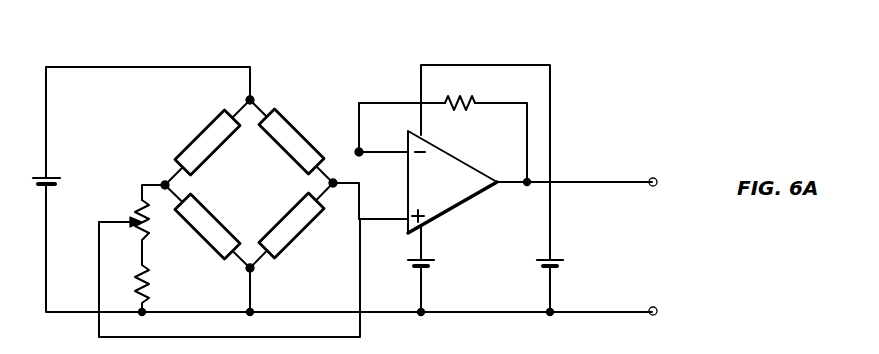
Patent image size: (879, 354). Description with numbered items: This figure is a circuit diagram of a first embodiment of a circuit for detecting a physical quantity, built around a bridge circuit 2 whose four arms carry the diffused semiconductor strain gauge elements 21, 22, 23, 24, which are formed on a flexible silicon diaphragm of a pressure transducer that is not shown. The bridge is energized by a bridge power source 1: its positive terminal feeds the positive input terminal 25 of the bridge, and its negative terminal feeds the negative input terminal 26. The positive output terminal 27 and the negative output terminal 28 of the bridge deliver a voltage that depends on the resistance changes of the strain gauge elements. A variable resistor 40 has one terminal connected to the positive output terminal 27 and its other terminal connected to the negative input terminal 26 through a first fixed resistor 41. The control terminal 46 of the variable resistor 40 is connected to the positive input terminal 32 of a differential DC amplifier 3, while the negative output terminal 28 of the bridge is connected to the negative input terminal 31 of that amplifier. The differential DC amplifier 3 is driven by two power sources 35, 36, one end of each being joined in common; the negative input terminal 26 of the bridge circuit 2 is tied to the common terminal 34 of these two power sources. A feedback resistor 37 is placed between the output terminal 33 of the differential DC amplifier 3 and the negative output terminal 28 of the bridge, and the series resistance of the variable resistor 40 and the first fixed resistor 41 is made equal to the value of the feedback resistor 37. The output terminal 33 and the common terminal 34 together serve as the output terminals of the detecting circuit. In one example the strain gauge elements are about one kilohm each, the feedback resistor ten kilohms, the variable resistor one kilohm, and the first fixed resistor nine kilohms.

The bridge power source 1 is at (46, 176).
The bridge circuit 2 is at (257, 193).
The strain gauge element 21 is at (203, 137).
The strain gauge element 22 is at (218, 248).
The strain gauge element 23 is at (286, 244).
The strain gauge element 24 is at (293, 138).
The positive input terminal 25 is at (254, 97).
The negative input terminal 26 is at (254, 276).
The positive output terminal 27 is at (163, 181).
The negative output terminal 28 is at (336, 178).
The differential DC amplifier 3 is at (442, 193).
The negative input terminal 31 is at (397, 154).
The positive input terminal 32 is at (398, 223).
The output terminal 33 is at (666, 170).
The common terminal 34 is at (657, 307).
The power source 35 is at (428, 258).
The power source 36 is at (560, 258).
The feedback resistor 37 is at (479, 112).
The variable resistor 40 is at (136, 215).
The first fixed resistor 41 is at (158, 262).
The control terminal 46 is at (107, 228).